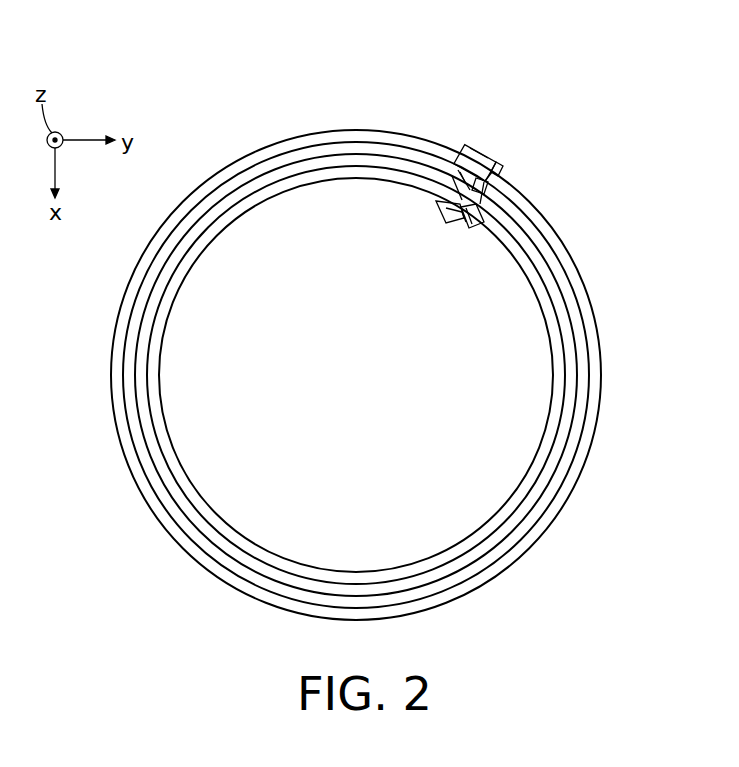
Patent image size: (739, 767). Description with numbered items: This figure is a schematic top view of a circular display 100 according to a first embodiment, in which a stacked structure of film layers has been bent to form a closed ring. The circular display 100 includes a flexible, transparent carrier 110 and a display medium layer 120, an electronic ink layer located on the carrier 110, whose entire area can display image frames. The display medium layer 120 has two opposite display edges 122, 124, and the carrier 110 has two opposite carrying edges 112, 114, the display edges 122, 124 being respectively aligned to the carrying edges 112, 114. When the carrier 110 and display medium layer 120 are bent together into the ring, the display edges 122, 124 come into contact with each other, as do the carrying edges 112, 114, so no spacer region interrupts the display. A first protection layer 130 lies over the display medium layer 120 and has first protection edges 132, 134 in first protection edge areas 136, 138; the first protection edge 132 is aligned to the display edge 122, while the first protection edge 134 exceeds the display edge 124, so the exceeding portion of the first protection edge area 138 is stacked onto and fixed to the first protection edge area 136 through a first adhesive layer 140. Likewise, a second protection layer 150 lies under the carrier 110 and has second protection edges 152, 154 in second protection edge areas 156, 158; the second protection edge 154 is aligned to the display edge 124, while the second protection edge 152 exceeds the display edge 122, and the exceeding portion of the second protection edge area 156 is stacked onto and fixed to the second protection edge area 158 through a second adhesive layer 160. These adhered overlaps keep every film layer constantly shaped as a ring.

The circular display 100 is at (660, 637).
The carrier 110 is at (576, 380).
The carrying edge 112 is at (484, 204).
The carrying edge 114 is at (452, 176).
The display medium layer 120 is at (586, 345).
The display edge 122 is at (486, 190).
The display edge 124 is at (460, 172).
The first protection layer 130 is at (592, 308).
The first protection edge 132 is at (488, 152).
The first protection edge 134 is at (462, 143).
The first protection edge area 136 is at (499, 159).
The first protection edge area 138 is at (479, 143).
The first adhesive layer 140 is at (489, 180).
The second protection layer 150 is at (549, 425).
The second protection edge 152 is at (478, 224).
The second protection edge 154 is at (448, 207).
The second protection edge area 156 is at (468, 226).
The second protection edge area 158 is at (460, 223).
The second adhesive layer 160 is at (446, 199).